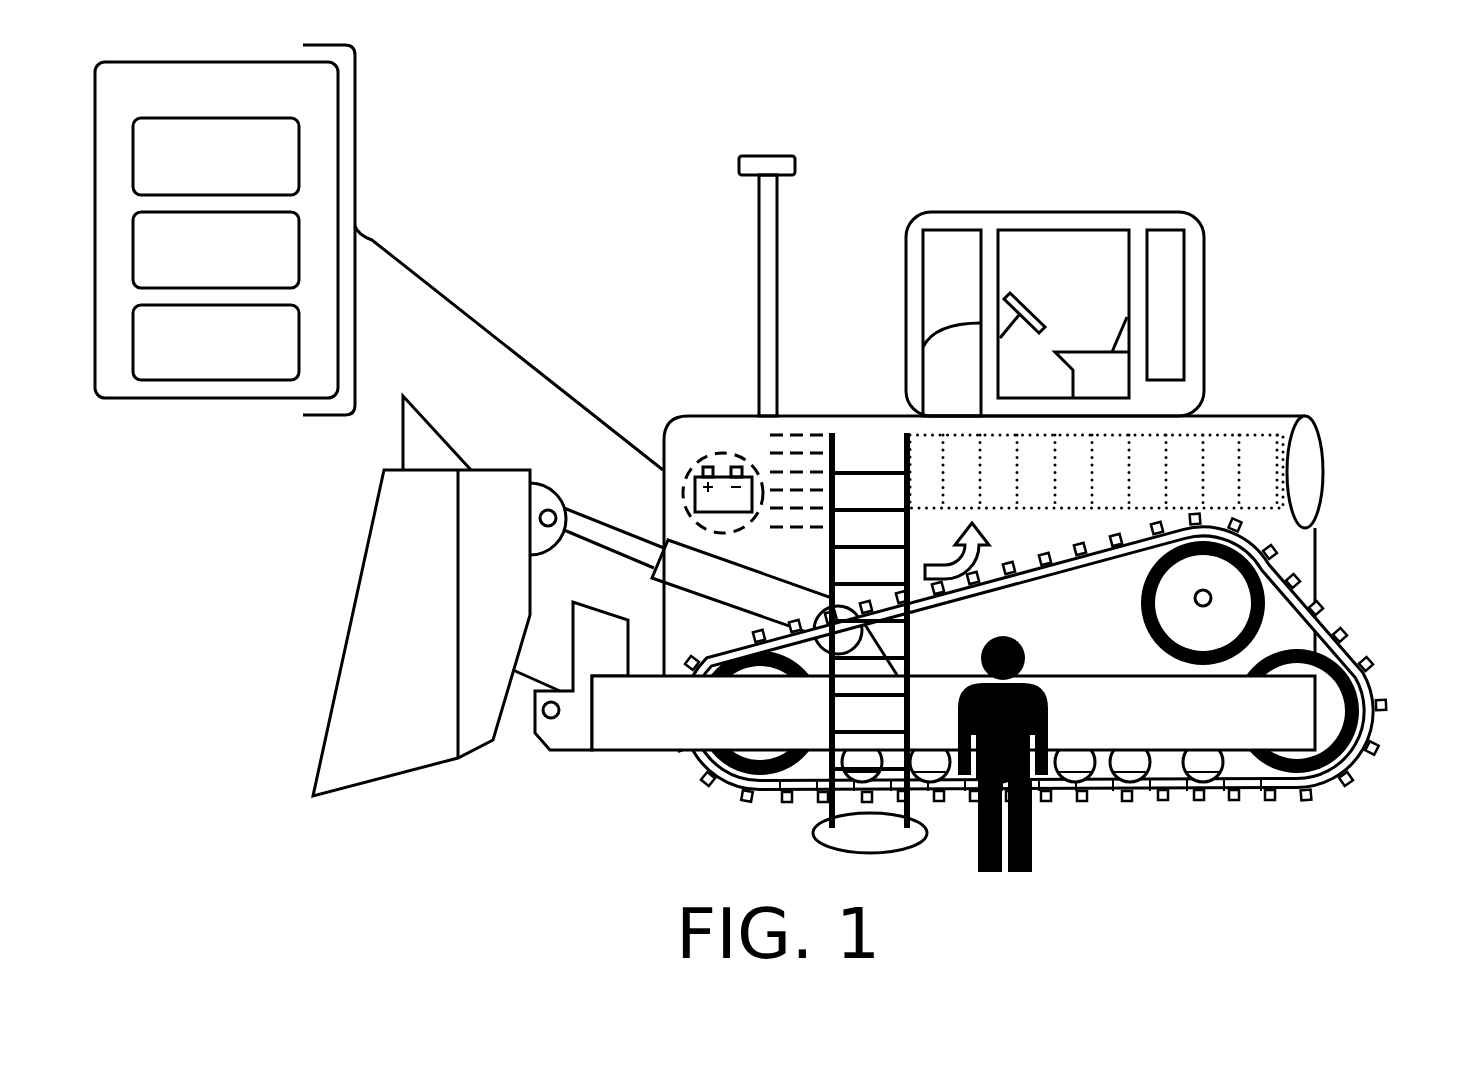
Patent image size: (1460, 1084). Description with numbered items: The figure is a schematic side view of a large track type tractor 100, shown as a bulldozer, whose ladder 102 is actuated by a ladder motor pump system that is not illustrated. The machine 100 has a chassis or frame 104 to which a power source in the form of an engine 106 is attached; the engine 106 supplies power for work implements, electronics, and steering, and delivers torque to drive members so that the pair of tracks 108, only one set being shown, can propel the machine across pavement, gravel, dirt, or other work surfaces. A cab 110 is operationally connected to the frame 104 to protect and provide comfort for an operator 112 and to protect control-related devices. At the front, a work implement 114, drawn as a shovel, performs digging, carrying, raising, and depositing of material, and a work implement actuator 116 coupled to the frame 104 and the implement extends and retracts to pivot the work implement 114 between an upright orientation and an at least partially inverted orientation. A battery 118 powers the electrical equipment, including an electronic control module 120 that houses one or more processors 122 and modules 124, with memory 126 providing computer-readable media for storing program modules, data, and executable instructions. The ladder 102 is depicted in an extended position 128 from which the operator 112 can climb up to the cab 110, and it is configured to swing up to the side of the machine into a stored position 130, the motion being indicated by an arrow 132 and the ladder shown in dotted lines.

The large track type tractor 100 is at (1242, 415).
The ladder 102 is at (880, 473).
The frame 104 is at (1295, 557).
The engine 106 is at (780, 443).
The tracks 108 is at (1312, 613).
The cab 110 is at (1205, 265).
The operator 112 is at (1030, 862).
The work implement 114 is at (332, 730).
The work implement actuator 116 is at (655, 548).
The battery 118 is at (707, 460).
The electronic control module 120 is at (268, 104).
The processors 122 is at (196, 183).
The modules 124 is at (196, 277).
The memory 126 is at (196, 368).
The extended position 128 is at (798, 846).
The stored position 130 is at (1338, 464).
The arrow 132 is at (978, 551).